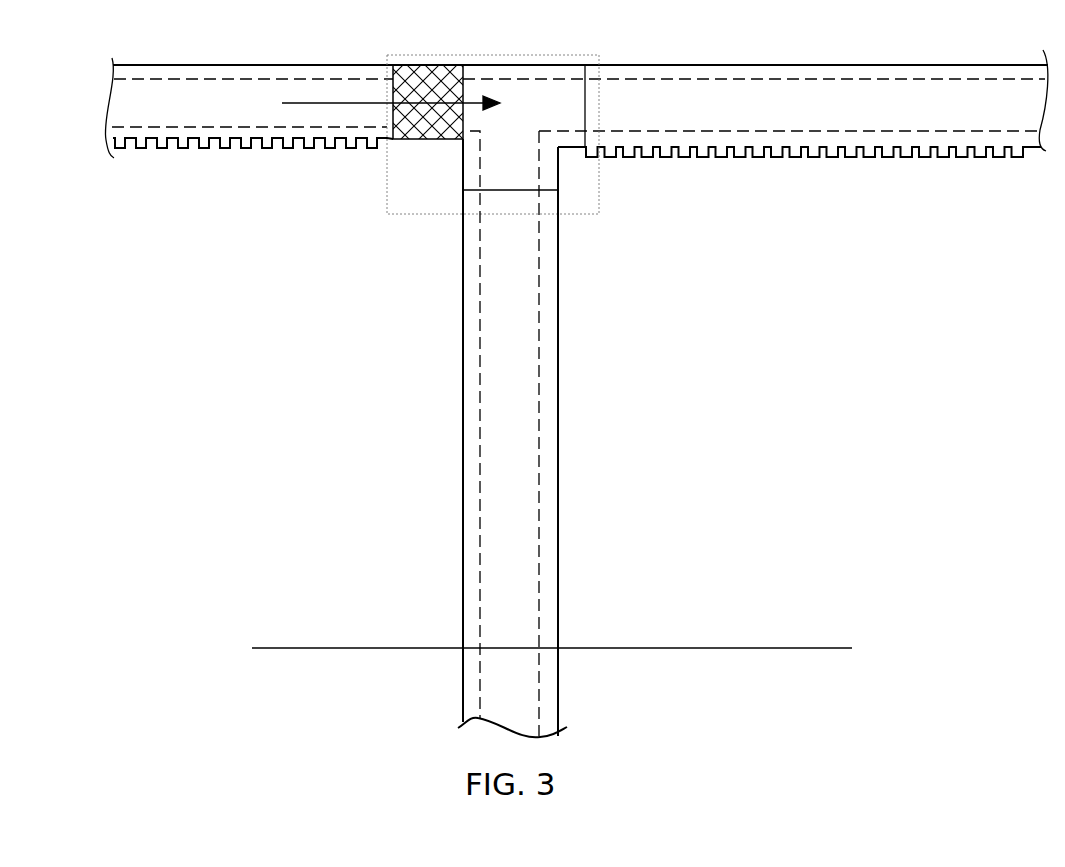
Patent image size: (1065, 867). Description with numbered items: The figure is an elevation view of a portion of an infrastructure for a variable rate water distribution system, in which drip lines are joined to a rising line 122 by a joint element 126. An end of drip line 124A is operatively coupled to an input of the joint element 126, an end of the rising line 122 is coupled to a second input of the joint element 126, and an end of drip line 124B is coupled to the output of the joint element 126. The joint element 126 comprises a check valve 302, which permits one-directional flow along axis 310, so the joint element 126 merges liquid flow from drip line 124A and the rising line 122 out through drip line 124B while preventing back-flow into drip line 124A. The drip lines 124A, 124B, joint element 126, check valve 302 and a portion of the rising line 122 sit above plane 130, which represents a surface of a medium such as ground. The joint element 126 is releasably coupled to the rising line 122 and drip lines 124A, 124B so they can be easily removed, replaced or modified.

The drip line 124A is at (162, 65).
The drip line 124B is at (698, 65).
The check valve 302 is at (412, 65).
The joint element 126 is at (550, 55).
The axis 310 is at (292, 102).
The rising line 122 is at (462, 280).
The plane 130 is at (832, 647).